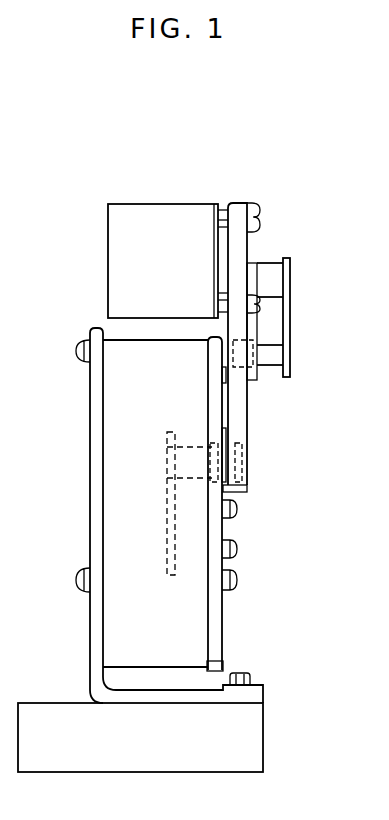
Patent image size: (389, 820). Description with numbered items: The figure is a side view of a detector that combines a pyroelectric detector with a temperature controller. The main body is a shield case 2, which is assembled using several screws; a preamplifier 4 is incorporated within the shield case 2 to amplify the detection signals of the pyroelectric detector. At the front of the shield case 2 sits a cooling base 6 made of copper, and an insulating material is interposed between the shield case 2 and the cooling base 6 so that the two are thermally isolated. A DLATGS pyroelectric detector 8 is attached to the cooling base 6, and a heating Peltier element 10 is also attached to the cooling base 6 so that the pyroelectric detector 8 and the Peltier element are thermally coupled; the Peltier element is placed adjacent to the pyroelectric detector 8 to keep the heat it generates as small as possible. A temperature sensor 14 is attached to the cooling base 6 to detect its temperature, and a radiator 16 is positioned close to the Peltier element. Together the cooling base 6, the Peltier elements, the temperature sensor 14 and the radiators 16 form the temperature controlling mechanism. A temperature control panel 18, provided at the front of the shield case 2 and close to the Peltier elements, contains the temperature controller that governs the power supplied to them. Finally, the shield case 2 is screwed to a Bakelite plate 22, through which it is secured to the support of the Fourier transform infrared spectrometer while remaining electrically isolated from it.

The shield case 2 is at (190, 637).
The preamplifier 4 is at (175, 557).
The cooling base 6 is at (247, 417).
The DLATGS pyroelectric detector 8 is at (242, 467).
The heating Peltier element 10 is at (222, 252).
The temperature sensor 14 is at (252, 353).
The radiator 16 is at (138, 204).
The temperature control panel 18 is at (292, 308).
The Bakelite plate 22 is at (263, 747).